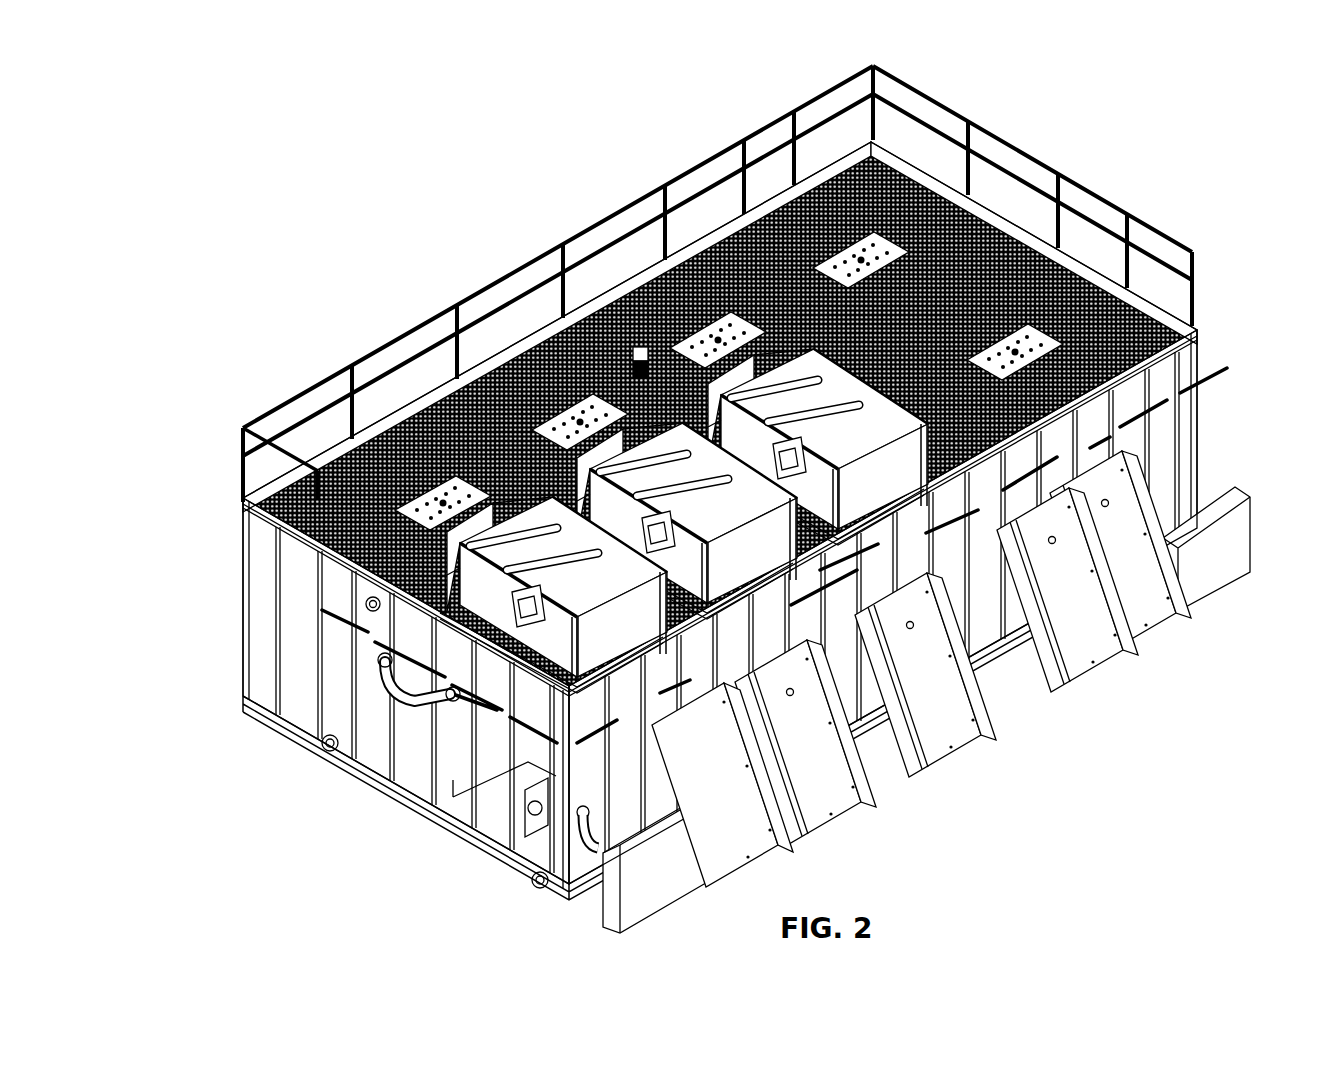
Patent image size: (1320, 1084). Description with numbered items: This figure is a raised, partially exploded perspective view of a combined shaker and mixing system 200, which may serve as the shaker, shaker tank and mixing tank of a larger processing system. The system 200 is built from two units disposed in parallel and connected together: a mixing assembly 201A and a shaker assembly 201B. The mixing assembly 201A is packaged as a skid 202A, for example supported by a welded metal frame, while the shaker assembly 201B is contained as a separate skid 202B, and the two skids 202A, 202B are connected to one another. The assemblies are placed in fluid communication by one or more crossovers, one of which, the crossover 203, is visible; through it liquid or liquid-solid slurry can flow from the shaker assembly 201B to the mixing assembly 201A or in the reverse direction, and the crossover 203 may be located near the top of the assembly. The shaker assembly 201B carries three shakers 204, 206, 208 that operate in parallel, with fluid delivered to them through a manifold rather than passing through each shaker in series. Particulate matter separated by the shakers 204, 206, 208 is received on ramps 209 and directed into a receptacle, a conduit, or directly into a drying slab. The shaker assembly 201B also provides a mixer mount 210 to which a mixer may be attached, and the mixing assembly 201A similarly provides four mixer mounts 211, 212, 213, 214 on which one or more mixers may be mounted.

The combined shaker and mixing system 200 is at (340, 117).
The mixing assembly 201A is at (953, 108).
The shaker assembly 201B is at (1143, 212).
The skid 202A is at (243, 556).
The skid 202B is at (500, 848).
The crossover 203 is at (395, 690).
The shaker 204 is at (522, 548).
The shaker 206 is at (652, 474).
The shaker 208 is at (785, 400).
The ramps 209 is at (752, 838).
The mixer mount 210 is at (1057, 362).
The mixer mount 211 is at (440, 492).
The mixer mount 212 is at (583, 423).
The mixer mount 213 is at (718, 342).
The mixer mount 214 is at (866, 236).